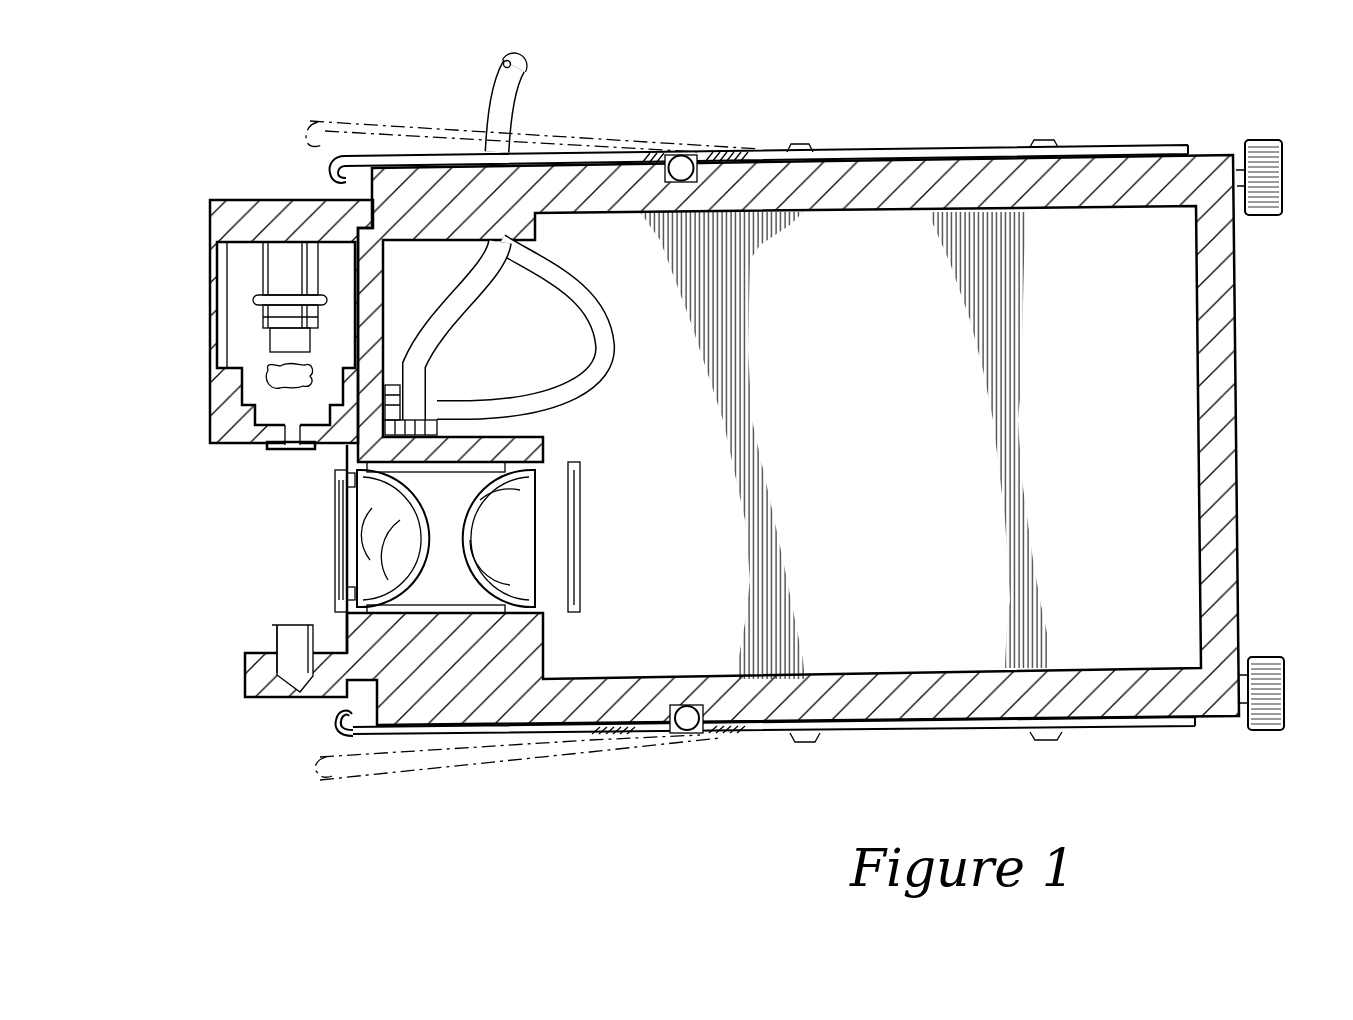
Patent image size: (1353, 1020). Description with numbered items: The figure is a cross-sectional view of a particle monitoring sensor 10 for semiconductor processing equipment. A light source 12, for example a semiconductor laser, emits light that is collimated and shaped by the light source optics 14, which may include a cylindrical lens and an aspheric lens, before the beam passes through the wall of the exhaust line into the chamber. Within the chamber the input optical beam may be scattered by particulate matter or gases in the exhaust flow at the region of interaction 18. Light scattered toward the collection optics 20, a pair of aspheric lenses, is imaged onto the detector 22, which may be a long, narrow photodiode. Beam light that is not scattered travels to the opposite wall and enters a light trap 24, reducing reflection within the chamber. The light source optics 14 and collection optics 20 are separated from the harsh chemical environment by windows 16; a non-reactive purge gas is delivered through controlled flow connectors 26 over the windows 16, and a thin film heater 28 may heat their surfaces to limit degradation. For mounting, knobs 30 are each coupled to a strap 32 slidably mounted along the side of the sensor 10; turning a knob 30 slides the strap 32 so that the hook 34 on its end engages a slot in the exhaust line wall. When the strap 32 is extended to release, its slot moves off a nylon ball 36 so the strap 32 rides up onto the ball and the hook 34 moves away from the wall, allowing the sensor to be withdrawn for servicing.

The particle monitoring sensor 10 is at (893, 100).
The light source 12 is at (283, 337).
The light source optics 14 is at (267, 370).
The windows 16 is at (335, 508).
The region of interaction 18 is at (290, 543).
The collection optics 20 is at (460, 530).
The detector 22 is at (582, 532).
The light trap 24 is at (283, 648).
The controlled flow connectors 26 is at (448, 408).
The thin film heater 28 is at (340, 633).
The knobs 30 is at (1280, 164).
The strap 32 is at (458, 742).
The hook 34 is at (337, 722).
The nylon ball 36 is at (683, 730).